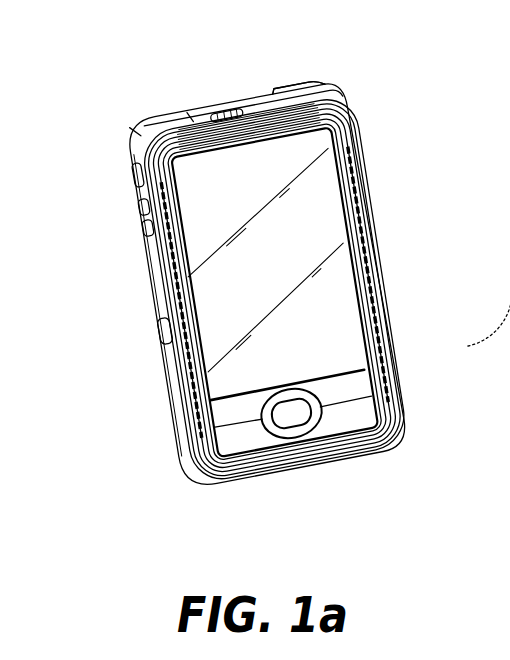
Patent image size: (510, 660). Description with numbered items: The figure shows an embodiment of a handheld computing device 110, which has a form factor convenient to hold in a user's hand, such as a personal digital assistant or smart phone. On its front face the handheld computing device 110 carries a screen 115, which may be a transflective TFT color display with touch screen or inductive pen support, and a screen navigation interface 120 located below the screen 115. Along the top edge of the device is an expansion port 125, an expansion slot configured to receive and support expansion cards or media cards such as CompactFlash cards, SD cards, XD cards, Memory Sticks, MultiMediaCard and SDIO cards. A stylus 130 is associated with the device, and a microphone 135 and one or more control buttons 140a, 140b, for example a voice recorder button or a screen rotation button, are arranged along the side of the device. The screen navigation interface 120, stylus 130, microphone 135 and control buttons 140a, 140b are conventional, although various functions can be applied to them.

The handheld computing device 110 is at (425, 507).
The screen 115 is at (330, 204).
The screen navigation interface 120 is at (291, 434).
The expansion port 125 is at (240, 94).
The stylus 130 is at (320, 91).
The microphone 135 is at (130, 172).
The control button 140a is at (141, 215).
The control button 140b is at (158, 324).